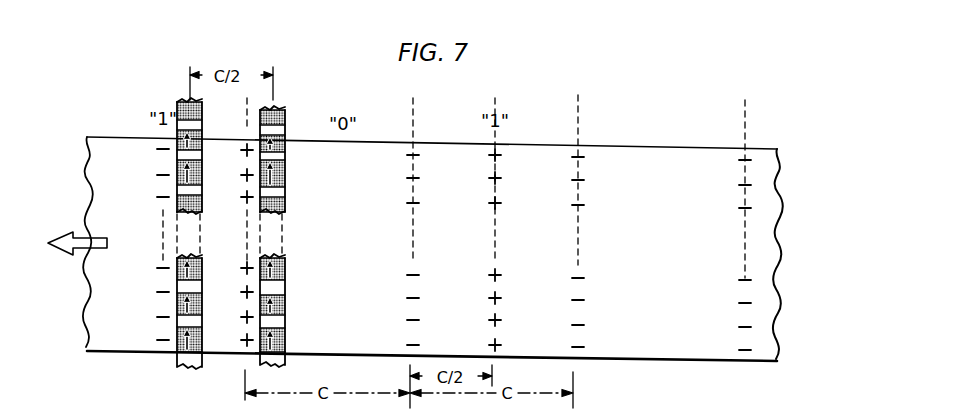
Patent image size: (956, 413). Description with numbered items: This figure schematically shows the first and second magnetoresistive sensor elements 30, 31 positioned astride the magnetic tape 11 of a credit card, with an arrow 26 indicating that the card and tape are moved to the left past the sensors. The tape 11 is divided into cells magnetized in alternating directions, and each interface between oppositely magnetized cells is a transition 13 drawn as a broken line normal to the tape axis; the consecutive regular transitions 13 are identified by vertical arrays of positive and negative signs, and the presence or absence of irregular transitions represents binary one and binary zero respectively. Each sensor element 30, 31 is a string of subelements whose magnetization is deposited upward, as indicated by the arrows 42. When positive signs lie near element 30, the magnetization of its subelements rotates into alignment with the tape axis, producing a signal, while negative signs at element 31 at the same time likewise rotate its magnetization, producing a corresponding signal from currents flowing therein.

The magnetic tape 11 is at (683, 160).
The transition 13 is at (247, 113).
The arrow 26 is at (81, 233).
The first magnetoresistive element 30 is at (274, 240).
The second magnetoresistive element 31 is at (190, 240).
The arrows 42 is at (200, 280).